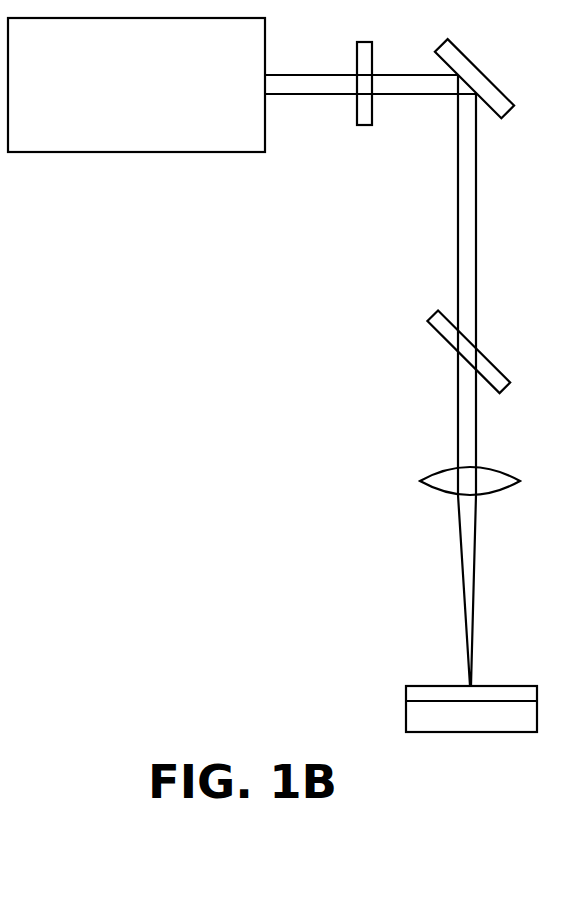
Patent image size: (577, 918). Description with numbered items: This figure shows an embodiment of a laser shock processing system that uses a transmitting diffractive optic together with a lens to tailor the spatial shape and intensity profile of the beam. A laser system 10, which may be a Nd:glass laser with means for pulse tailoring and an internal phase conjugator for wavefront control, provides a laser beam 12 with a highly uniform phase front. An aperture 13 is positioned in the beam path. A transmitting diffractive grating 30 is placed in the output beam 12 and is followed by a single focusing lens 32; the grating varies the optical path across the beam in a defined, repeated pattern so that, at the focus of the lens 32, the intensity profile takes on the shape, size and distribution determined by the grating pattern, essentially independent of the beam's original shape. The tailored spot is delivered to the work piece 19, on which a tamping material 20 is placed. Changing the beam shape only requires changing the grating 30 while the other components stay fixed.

The laser system 10 is at (157, 152).
The laser beam 12 is at (290, 75).
The aperture 13 is at (357, 107).
The transmitting diffractive grating 30 is at (431, 321).
The focusing lens 32 is at (422, 481).
The work piece 19 is at (406, 718).
The tamping material 20 is at (421, 686).